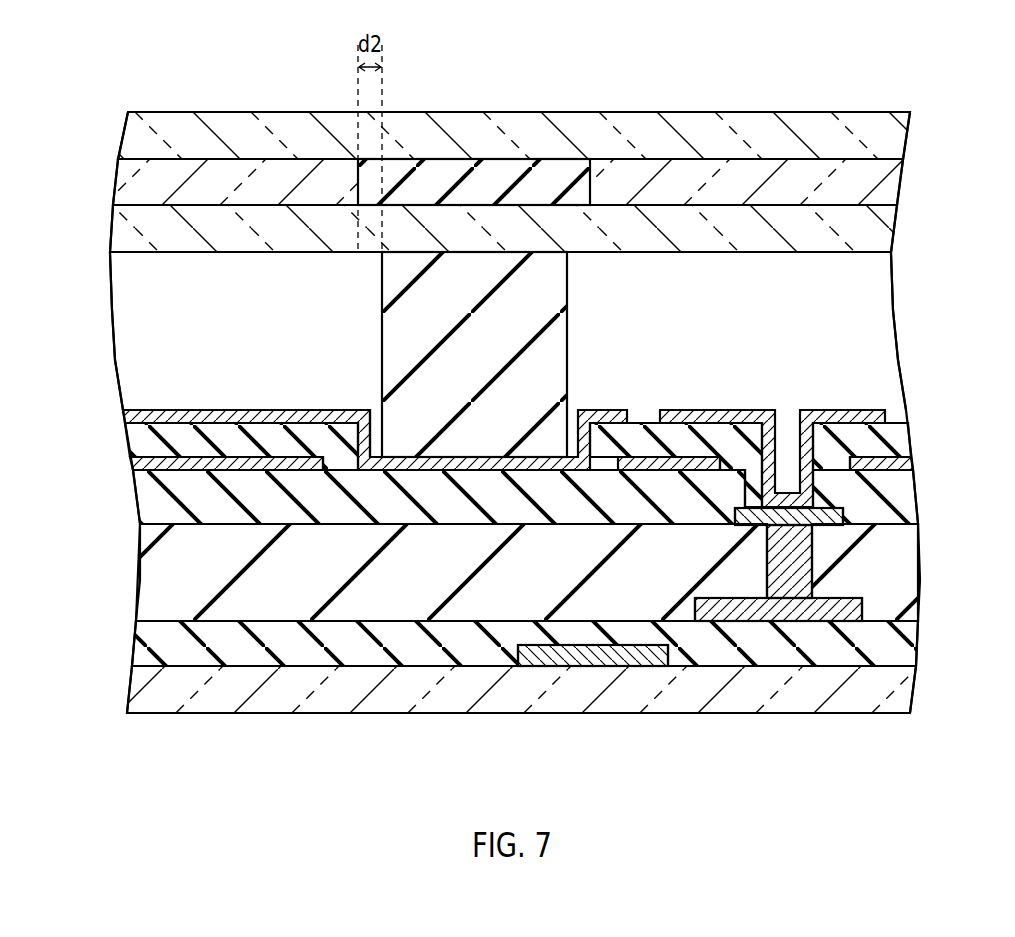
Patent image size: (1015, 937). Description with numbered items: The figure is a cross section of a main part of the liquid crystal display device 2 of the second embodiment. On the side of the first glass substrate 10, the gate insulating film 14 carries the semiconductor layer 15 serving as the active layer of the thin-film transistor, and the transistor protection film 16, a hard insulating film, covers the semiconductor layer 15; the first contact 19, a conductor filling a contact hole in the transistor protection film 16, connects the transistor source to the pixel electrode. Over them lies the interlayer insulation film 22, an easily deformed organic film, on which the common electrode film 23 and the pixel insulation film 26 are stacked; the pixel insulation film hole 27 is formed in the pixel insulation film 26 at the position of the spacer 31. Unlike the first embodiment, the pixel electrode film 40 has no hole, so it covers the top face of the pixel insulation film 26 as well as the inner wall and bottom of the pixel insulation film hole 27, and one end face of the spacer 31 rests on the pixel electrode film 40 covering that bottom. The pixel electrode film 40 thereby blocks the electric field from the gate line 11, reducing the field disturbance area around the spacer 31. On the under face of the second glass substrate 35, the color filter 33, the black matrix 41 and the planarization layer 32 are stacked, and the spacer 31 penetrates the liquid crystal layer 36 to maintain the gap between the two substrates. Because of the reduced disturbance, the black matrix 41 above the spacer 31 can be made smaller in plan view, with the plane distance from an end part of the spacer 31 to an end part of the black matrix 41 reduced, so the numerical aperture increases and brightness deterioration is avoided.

The liquid crystal display device 2 is at (902, 51).
The first glass substrate 10 is at (905, 687).
The gate line 11 is at (550, 655).
The gate insulating film 14 is at (910, 640).
The semiconductor layer 15 is at (838, 610).
The transistor protection film 16 is at (912, 548).
The first contact 19 is at (794, 570).
The interlayer insulation film 22 is at (905, 487).
The common electrode film 23 is at (905, 462).
The pixel insulation film 26 is at (893, 430).
The pixel insulation film hole 27 is at (358, 445).
The spacer 31 is at (410, 270).
The planarization layer 32 is at (875, 232).
The color filter 33 is at (888, 186).
The second glass substrate 35 is at (882, 137).
The liquid crystal layer 36 is at (877, 306).
The pixel electrode film 40 is at (880, 412).
The black matrix 41 is at (532, 183).